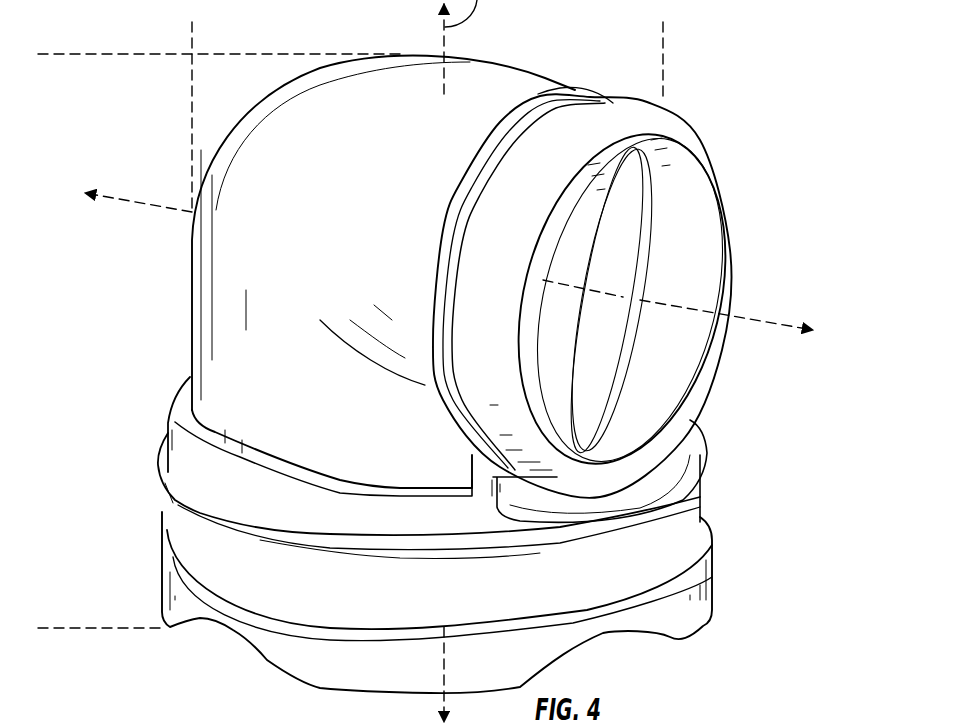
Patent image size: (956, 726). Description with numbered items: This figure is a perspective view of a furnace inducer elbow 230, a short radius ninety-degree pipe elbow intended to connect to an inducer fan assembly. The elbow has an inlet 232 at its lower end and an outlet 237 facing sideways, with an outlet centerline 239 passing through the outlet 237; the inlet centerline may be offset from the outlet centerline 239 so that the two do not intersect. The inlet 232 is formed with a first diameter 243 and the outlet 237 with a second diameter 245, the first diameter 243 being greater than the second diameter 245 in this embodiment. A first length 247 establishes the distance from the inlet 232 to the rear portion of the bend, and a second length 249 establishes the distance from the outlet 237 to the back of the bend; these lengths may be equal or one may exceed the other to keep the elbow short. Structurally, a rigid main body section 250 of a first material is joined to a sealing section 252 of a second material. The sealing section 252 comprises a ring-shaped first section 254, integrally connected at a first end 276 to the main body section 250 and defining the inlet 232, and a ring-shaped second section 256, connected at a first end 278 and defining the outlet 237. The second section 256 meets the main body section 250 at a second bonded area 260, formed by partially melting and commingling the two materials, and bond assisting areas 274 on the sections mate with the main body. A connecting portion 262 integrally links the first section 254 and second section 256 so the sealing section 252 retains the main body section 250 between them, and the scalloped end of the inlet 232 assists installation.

The furnace inducer elbow 230 is at (165, 173).
The inlet 232 is at (243, 632).
The outlet 237 is at (710, 202).
The outlet centerline 239 is at (773, 323).
The first diameter 243 is at (698, 527).
The second diameter 245 is at (603, 460).
The first length 247 is at (67, 57).
The second length 249 is at (661, 37).
The main body section 250 is at (238, 342).
The sealing section 252 is at (705, 457).
The first section 254 is at (590, 587).
The second section 256 is at (540, 72).
The second bonded area 260 is at (565, 84).
The connecting portion 262 is at (712, 562).
The bond assisting areas 274 is at (455, 193).
The first end 276 is at (183, 480).
The first end 278 is at (450, 238).